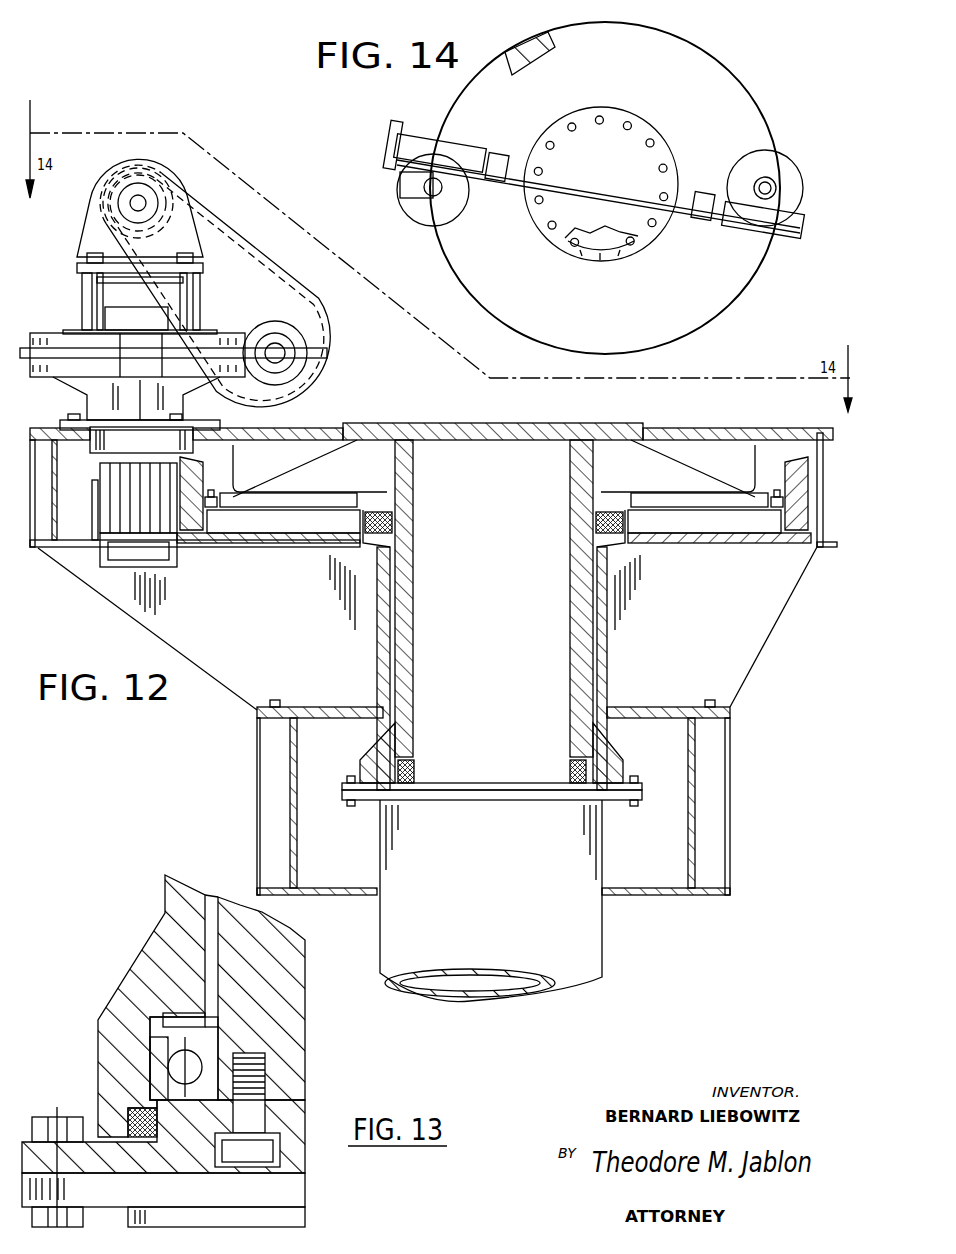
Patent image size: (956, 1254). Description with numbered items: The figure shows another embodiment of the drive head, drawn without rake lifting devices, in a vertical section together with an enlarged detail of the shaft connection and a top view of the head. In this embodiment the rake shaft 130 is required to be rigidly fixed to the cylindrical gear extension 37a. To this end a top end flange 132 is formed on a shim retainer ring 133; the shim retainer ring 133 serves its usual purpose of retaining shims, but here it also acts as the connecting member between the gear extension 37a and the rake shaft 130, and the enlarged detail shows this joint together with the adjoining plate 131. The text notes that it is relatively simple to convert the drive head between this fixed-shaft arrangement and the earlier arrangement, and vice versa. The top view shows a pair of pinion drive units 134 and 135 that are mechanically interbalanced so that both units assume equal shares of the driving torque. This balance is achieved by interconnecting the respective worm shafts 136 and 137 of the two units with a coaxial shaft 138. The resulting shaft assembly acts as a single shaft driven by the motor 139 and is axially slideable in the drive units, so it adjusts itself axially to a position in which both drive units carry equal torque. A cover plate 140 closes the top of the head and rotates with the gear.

In FIG. 12, the rake shaft 130 is at (585, 968).
In FIG. 12, the plate 131 is at (360, 800).
In FIG. 13, the plate 131 is at (283, 1188).
In FIG. 12, the top end flange 132 is at (350, 792).
In FIG. 13, the top end flange 132 is at (92, 1143).
In FIG. 12, the shim retainer ring 133 is at (412, 786).
In FIG. 13, the shim retainer ring 133 is at (297, 1155).
In FIG. 14, the pinion drive unit 134 is at (420, 196).
In FIG. 14, the pinion drive unit 135 is at (800, 170).
In FIG. 14, the worm shaft 136 is at (498, 185).
In FIG. 14, the worm shaft 137 is at (716, 222).
In FIG. 14, the coaxial shaft 138 is at (598, 187).
In FIG. 14, the motor 139 is at (440, 226).
In FIG. 12, the cover plate 140 is at (470, 424).
In FIG. 14, the cover plate 140 is at (638, 130).
In FIG. 12, the cylindrical gear extension 37a is at (410, 650).
In FIG. 13, the cylindrical gear extension 37a is at (288, 1017).
In FIG. 14, the cylindrical gear extension 37a is at (592, 216).